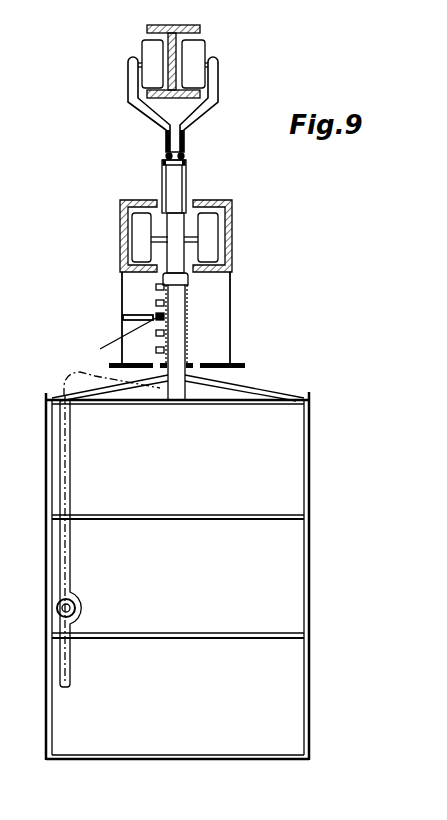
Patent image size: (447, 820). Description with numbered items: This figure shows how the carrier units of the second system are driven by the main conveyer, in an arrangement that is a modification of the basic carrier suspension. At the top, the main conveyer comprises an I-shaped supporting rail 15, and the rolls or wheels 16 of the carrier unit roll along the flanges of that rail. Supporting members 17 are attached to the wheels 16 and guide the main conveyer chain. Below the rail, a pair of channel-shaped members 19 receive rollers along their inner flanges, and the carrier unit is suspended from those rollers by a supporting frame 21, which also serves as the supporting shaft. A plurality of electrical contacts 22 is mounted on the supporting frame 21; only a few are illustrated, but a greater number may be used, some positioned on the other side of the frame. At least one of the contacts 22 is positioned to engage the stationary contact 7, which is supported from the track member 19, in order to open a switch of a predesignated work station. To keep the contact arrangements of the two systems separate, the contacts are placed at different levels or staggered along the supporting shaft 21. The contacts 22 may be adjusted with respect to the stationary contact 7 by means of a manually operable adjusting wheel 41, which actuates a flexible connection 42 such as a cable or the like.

The I-shaped supporting rail 15 is at (200, 28).
The wheels 16 is at (199, 53).
The supporting members 17 is at (216, 105).
The channel-shaped members 19 is at (121, 250).
The supporting frame 21 is at (178, 326).
The electrical contacts 22 is at (156, 303).
The stationary contact 7 is at (124, 320).
The flexible connection 42 is at (60, 498).
The adjusting wheel 41 is at (62, 611).